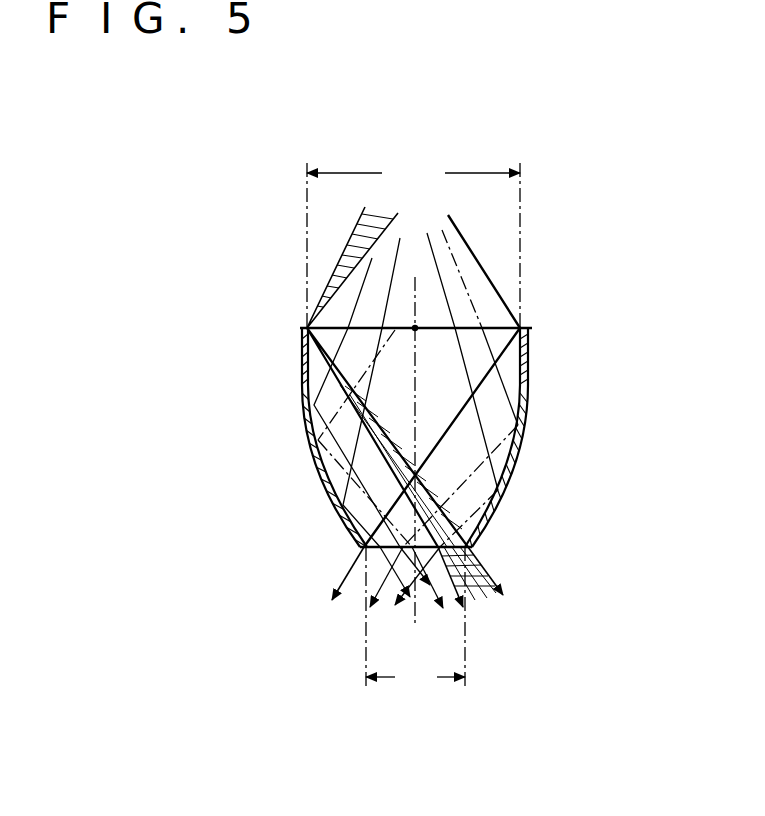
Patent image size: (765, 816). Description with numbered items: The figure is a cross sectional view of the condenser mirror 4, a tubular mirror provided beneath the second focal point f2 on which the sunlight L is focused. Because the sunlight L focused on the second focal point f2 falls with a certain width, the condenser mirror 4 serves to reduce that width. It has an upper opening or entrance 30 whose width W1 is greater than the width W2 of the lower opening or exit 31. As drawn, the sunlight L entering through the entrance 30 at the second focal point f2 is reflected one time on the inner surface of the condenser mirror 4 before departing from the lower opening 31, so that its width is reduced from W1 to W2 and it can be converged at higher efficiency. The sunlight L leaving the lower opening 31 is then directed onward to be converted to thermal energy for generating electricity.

The condenser mirror 4 is at (530, 447).
The upper opening or entrance 30 is at (466, 328).
The lower opening or exit 31 is at (472, 564).
The sunlight L is at (345, 232).
The second focal point f2 is at (415, 329).
The width of upper opening W1 is at (413, 243).
The width of lower opening W2 is at (415, 621).